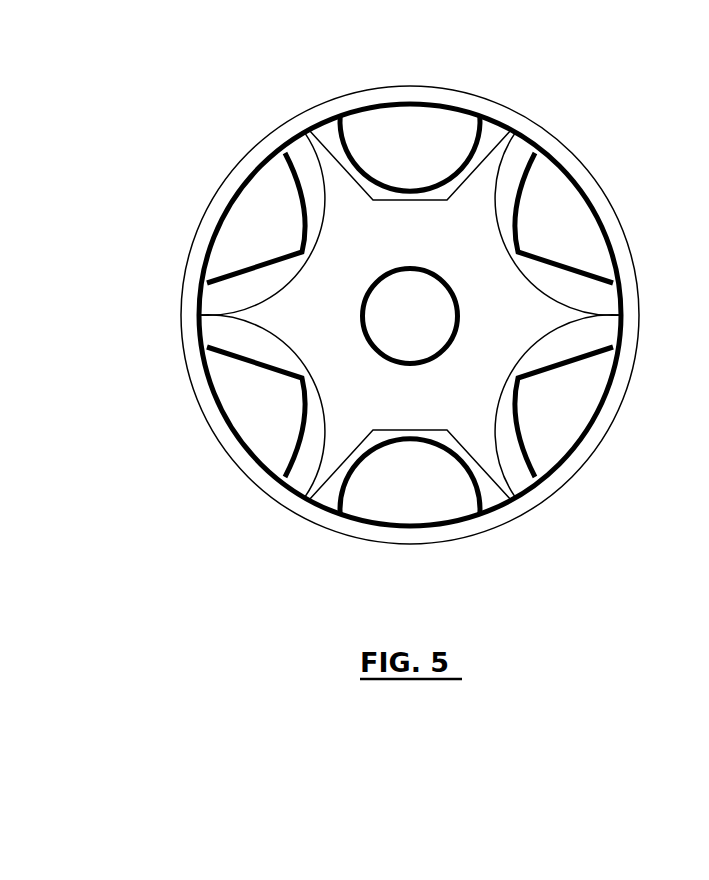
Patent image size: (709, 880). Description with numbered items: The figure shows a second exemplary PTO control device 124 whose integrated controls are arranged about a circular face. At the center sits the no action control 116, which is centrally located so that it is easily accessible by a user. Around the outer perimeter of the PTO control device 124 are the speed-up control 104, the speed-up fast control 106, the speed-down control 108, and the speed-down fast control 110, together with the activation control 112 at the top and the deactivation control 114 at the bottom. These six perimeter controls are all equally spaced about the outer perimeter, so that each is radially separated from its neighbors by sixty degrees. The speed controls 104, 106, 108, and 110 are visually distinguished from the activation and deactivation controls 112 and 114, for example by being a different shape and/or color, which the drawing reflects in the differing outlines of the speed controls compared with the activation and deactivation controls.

The speed-up control 104 is at (563, 357).
The speed-up fast control 106 is at (563, 271).
The speed-down control 108 is at (253, 273).
The speed-down fast control 110 is at (253, 357).
The activation control 112 is at (477, 137).
The deactivation control 114 is at (472, 484).
The no action control 116 is at (362, 329).
The PTO control device 124 is at (506, 90).